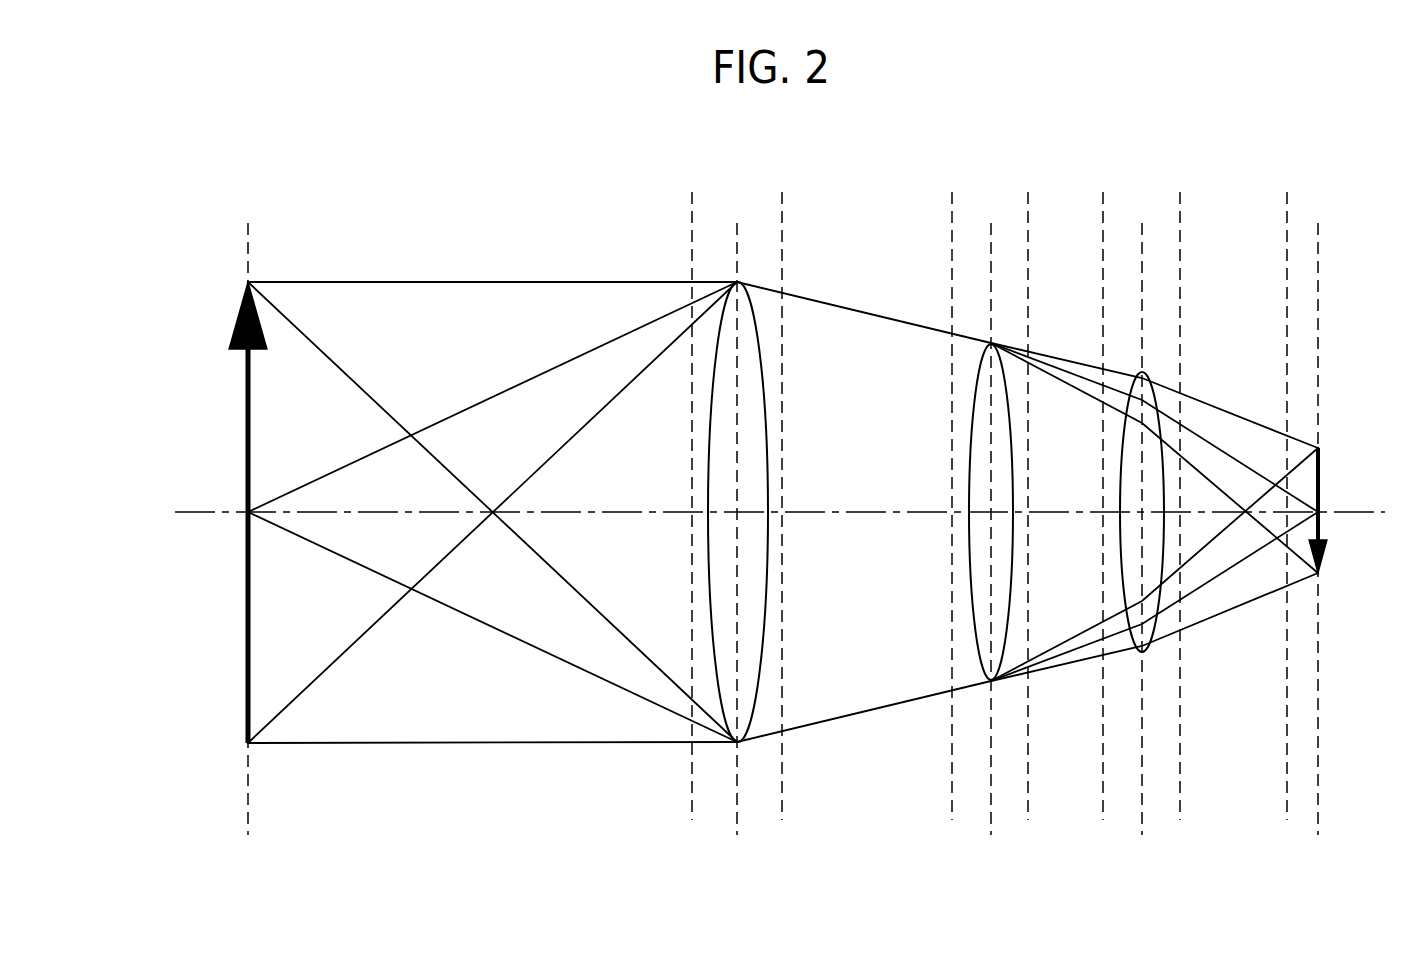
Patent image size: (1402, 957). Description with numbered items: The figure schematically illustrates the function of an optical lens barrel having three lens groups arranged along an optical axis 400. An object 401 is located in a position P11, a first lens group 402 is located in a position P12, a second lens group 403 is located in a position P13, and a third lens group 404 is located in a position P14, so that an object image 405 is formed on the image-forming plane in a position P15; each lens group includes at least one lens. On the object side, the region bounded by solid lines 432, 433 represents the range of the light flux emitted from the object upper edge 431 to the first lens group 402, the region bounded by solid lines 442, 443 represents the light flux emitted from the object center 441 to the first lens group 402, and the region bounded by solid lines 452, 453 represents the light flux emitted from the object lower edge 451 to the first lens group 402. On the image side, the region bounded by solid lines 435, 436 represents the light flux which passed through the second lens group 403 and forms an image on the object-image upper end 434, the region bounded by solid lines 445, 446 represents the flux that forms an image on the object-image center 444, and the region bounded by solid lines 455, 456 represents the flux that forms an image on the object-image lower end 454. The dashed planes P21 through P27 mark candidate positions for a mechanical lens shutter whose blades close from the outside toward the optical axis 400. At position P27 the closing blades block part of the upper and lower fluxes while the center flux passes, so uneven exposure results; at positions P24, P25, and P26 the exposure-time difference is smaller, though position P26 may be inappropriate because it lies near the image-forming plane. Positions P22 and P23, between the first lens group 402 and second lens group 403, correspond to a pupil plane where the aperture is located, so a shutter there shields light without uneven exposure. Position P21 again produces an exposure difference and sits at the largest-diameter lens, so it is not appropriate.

The optical axis 400 is at (824, 512).
The object 401 is at (247, 567).
The first lens group 402 is at (708, 533).
The second lens group 403 is at (969, 533).
The third lens group 404 is at (1120, 533).
The object image 405 is at (1322, 480).
The object upper edge 431 is at (248, 282).
The solid line 432 is at (455, 282).
The solid line 433 is at (345, 373).
The object-image upper end 434 is at (1319, 574).
The solid line 435 is at (1060, 665).
The solid line 436 is at (1055, 378).
The object center 441 is at (247, 511).
The solid line 442 is at (532, 378).
The solid line 443 is at (542, 650).
The object-image center 444 is at (1319, 513).
The solid line 445 is at (1215, 579).
The solid line 446 is at (1213, 445).
The object lower edge 451 is at (247, 743).
The solid line 452 is at (350, 647).
The solid line 453 is at (470, 743).
The object-image lower end 454 is at (1319, 448).
The solid line 455 is at (1062, 644).
The solid line 456 is at (1060, 359).
The object position P11 is at (248, 548).
The first lens group position P12 is at (737, 548).
The second lens group position P13 is at (991, 548).
The third lens group position P14 is at (1142, 548).
The image-forming plane position P15 is at (1318, 548).
The shutter position P21 is at (692, 490).
The shutter position P22 is at (782, 490).
The shutter position P23 is at (952, 490).
The shutter position P24 is at (1028, 490).
The shutter position P25 is at (1103, 490).
The shutter position P26 is at (1180, 490).
The shutter position P27 is at (1287, 490).